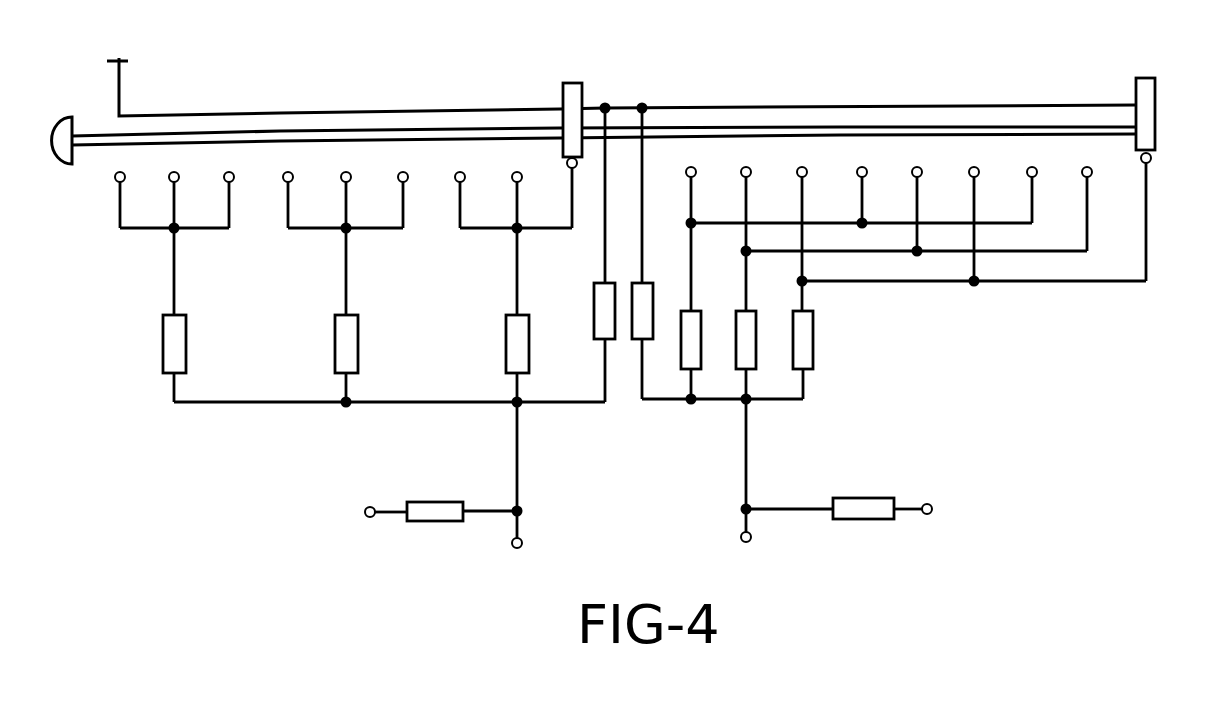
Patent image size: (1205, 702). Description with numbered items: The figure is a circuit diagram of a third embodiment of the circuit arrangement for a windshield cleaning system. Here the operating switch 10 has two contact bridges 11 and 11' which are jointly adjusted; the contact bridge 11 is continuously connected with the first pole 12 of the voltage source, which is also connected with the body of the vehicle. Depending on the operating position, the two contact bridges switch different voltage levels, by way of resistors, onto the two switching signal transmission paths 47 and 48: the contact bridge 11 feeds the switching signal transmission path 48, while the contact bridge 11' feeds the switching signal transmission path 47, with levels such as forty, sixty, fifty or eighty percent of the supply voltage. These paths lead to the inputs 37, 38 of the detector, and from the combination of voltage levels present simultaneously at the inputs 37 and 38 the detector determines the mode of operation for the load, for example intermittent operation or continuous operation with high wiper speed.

The operating switch 10 is at (786, 64).
The contact bridge 11 is at (603, 111).
The second contact bridge 11' is at (1168, 96).
The first pole of a voltage source 12 is at (124, 59).
The input of the programming unit 37 is at (766, 531).
The input of the programming unit 38 is at (539, 535).
The switching signal transmission path 47 is at (750, 459).
The switching signal transmission path 48 is at (520, 463).